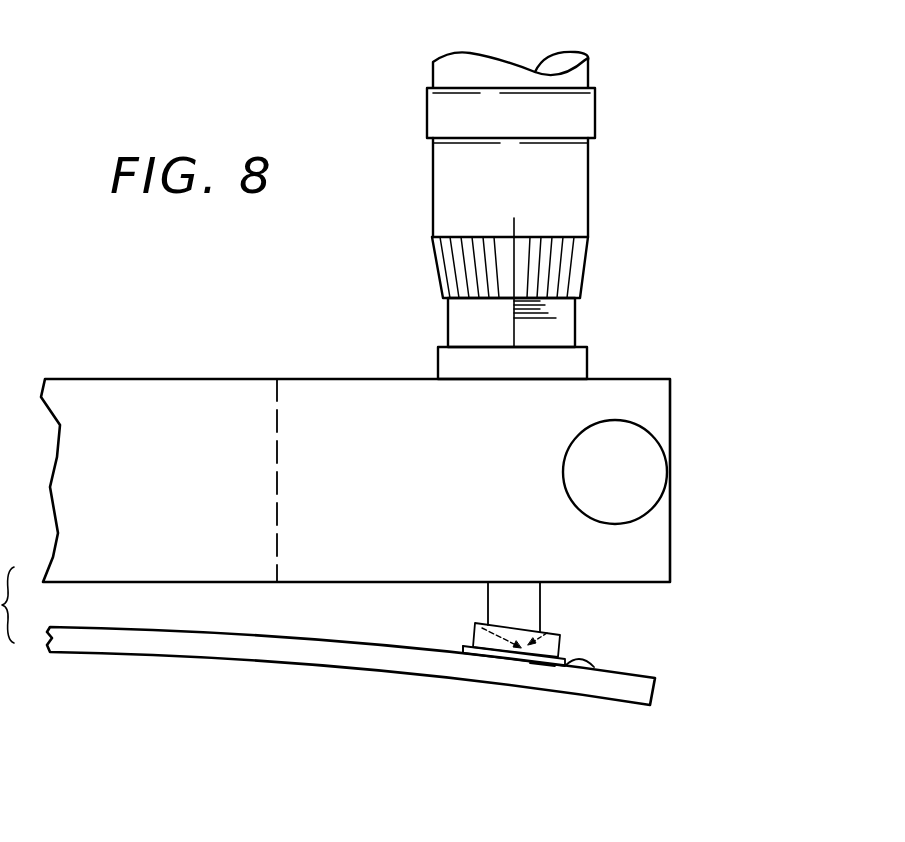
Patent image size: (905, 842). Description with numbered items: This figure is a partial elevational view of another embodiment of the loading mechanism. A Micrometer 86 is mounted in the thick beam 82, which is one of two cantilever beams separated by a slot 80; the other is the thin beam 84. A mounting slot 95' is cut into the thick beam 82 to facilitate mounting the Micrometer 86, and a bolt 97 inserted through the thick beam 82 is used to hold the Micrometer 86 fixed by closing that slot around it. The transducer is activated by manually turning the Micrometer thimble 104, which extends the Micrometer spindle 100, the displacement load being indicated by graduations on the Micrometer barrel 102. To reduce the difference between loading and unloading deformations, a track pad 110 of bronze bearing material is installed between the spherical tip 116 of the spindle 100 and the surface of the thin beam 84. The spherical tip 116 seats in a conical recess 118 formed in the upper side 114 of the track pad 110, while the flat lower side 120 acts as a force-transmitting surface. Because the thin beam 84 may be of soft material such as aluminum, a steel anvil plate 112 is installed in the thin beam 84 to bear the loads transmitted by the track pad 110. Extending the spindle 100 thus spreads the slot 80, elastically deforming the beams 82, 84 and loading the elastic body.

The Micrometer 86 is at (565, 215).
The Micrometer thimble 104 is at (580, 210).
The Micrometer barrel 102 is at (568, 319).
The thick beam 82 is at (145, 392).
The mounting slot 95' is at (317, 457).
The bolt 97 is at (640, 455).
The Micrometer spindle 100 is at (523, 600).
The slot 80 is at (69, 605).
The thin beam 84 is at (185, 642).
The upper side of the track pad 114 is at (557, 638).
The spherical tip 116 is at (470, 641).
The track pad 110 is at (562, 645).
The lower side of the track pad 120 is at (473, 657).
The conical recess 118 is at (542, 660).
The anvil plate 112 is at (590, 662).